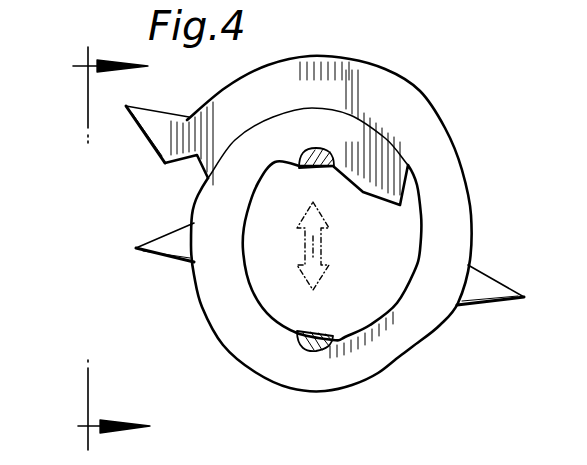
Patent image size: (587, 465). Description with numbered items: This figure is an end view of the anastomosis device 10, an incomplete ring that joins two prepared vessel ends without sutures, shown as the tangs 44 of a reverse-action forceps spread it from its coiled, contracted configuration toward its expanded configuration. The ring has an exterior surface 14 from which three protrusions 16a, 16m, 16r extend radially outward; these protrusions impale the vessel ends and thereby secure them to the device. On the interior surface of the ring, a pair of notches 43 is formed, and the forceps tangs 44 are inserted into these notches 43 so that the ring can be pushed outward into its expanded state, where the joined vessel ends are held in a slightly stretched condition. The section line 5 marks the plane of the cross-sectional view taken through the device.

The section line 5- 5 is at (111, 237).
The device 10 is at (462, 186).
The exterior surface 14 is at (327, 4).
The protrusion 16a is at (162, 118).
The protrusion 16r is at (163, 267).
The protrusion 16m is at (468, 304).
The notches 43 is at (300, 171).
The tangs 44 is at (331, 174).